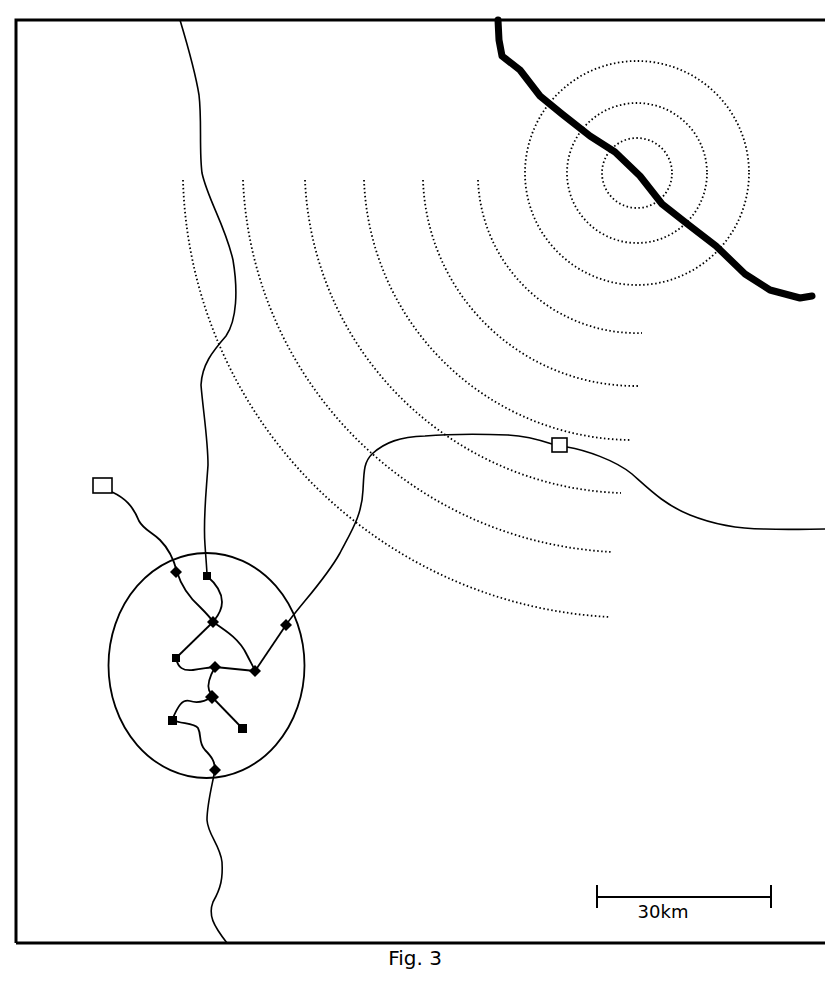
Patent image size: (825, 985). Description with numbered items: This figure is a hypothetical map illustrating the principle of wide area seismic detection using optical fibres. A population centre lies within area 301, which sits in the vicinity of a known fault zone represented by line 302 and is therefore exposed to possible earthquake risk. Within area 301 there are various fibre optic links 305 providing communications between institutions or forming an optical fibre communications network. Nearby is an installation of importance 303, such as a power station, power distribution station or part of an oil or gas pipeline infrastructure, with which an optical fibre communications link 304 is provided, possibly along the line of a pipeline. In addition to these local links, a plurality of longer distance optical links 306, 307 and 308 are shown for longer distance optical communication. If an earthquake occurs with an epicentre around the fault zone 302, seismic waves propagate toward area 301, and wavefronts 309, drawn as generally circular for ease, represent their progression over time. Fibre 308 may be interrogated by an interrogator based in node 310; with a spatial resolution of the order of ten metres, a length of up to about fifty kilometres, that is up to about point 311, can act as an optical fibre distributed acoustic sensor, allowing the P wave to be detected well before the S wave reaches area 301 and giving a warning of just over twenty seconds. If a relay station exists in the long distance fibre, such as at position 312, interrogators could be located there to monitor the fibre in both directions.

The area 301 is at (133, 740).
The fault zone 302 is at (767, 266).
The installation of importance 303 is at (107, 477).
The optical fibre communications link 304 is at (138, 524).
The fibre optic links 305 is at (178, 696).
The longer distance optical link 306 is at (193, 128).
The longer distance optical link 307 is at (232, 876).
The longer distance optical link 308 is at (741, 537).
The wavefronts 309 is at (414, 177).
The node 310 is at (300, 640).
The point 311 is at (400, 437).
The position 312 is at (567, 434).